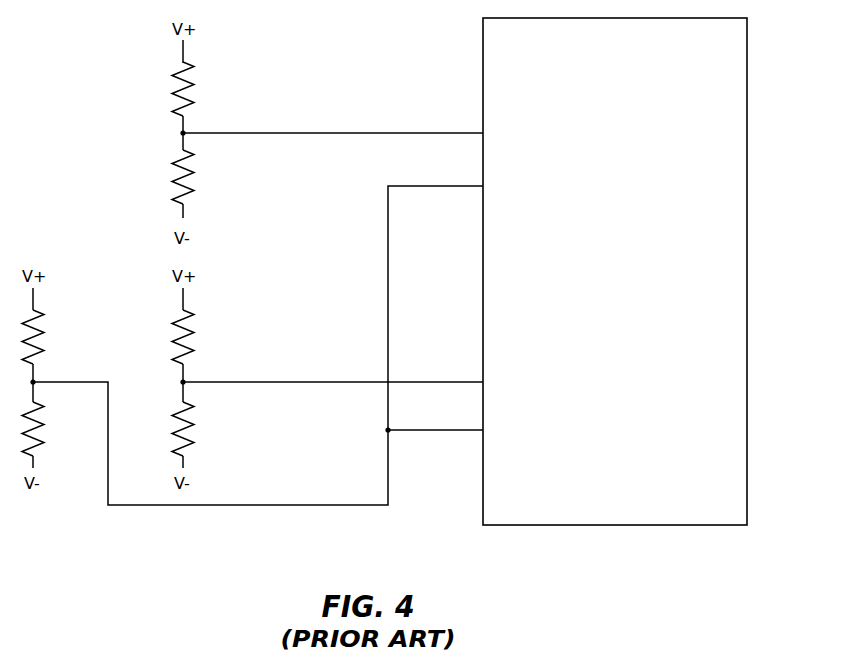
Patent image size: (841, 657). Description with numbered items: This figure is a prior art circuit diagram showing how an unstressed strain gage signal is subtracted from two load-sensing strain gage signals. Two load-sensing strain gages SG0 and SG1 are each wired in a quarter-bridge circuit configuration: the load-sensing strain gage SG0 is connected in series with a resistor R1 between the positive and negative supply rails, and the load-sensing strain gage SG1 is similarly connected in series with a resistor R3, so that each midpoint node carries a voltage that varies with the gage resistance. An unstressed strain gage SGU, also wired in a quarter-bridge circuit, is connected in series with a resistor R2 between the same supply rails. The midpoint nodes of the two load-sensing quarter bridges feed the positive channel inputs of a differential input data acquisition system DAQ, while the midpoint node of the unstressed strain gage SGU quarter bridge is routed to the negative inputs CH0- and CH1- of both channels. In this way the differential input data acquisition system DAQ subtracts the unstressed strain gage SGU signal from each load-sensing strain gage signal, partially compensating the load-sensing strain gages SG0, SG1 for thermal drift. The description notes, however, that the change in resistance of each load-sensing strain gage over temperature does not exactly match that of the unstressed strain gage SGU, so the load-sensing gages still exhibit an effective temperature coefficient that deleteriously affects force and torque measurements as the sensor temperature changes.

The resistor R1 (1k) R1 is at (198, 89).
The resistor R2 (1k) R2 is at (48, 337).
The resistor R3 (1k) R3 is at (198, 337).
The load-sensing strain gage SG0 is at (204, 177).
The load-sensing strain gage SG1 is at (204, 429).
The unstressed strain gage SGU is at (55, 429).
The channel 0 negative input CH0- is at (258, 333).
The channel 1 negative input CH1- is at (435, 418).
The differential input data acquisition system DAQ is at (615, 271).